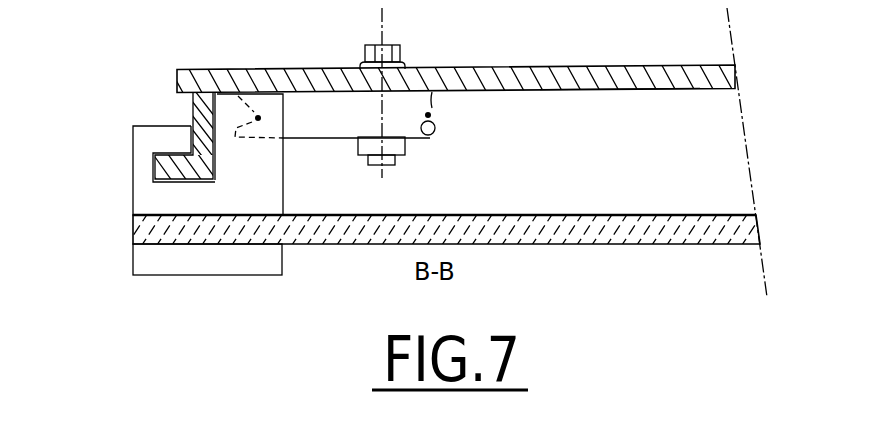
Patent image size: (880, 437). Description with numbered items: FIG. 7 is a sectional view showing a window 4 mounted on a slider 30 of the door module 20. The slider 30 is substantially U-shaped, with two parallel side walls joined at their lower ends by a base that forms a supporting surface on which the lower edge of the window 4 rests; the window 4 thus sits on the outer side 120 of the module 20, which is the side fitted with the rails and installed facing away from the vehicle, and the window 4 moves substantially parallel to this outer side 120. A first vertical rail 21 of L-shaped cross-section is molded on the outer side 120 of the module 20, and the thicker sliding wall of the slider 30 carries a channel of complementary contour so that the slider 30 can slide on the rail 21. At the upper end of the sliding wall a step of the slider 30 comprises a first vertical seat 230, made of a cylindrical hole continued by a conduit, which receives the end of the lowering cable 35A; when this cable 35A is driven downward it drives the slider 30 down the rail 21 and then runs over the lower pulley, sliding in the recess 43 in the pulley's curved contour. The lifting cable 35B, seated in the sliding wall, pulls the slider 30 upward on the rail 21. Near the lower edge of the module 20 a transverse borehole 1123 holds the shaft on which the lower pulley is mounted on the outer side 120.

The module 20 is at (574, 58).
The outer side of the module 120 is at (623, 98).
The transverse borehole 1123 is at (403, 64).
The recess 43 is at (437, 124).
The lowering cable 35A is at (258, 116).
The first vertical seat 230 is at (262, 118).
The lifting cable 35B is at (255, 187).
The slider 30 is at (122, 192).
The first vertical rail 21 is at (157, 165).
The window 4 is at (627, 232).